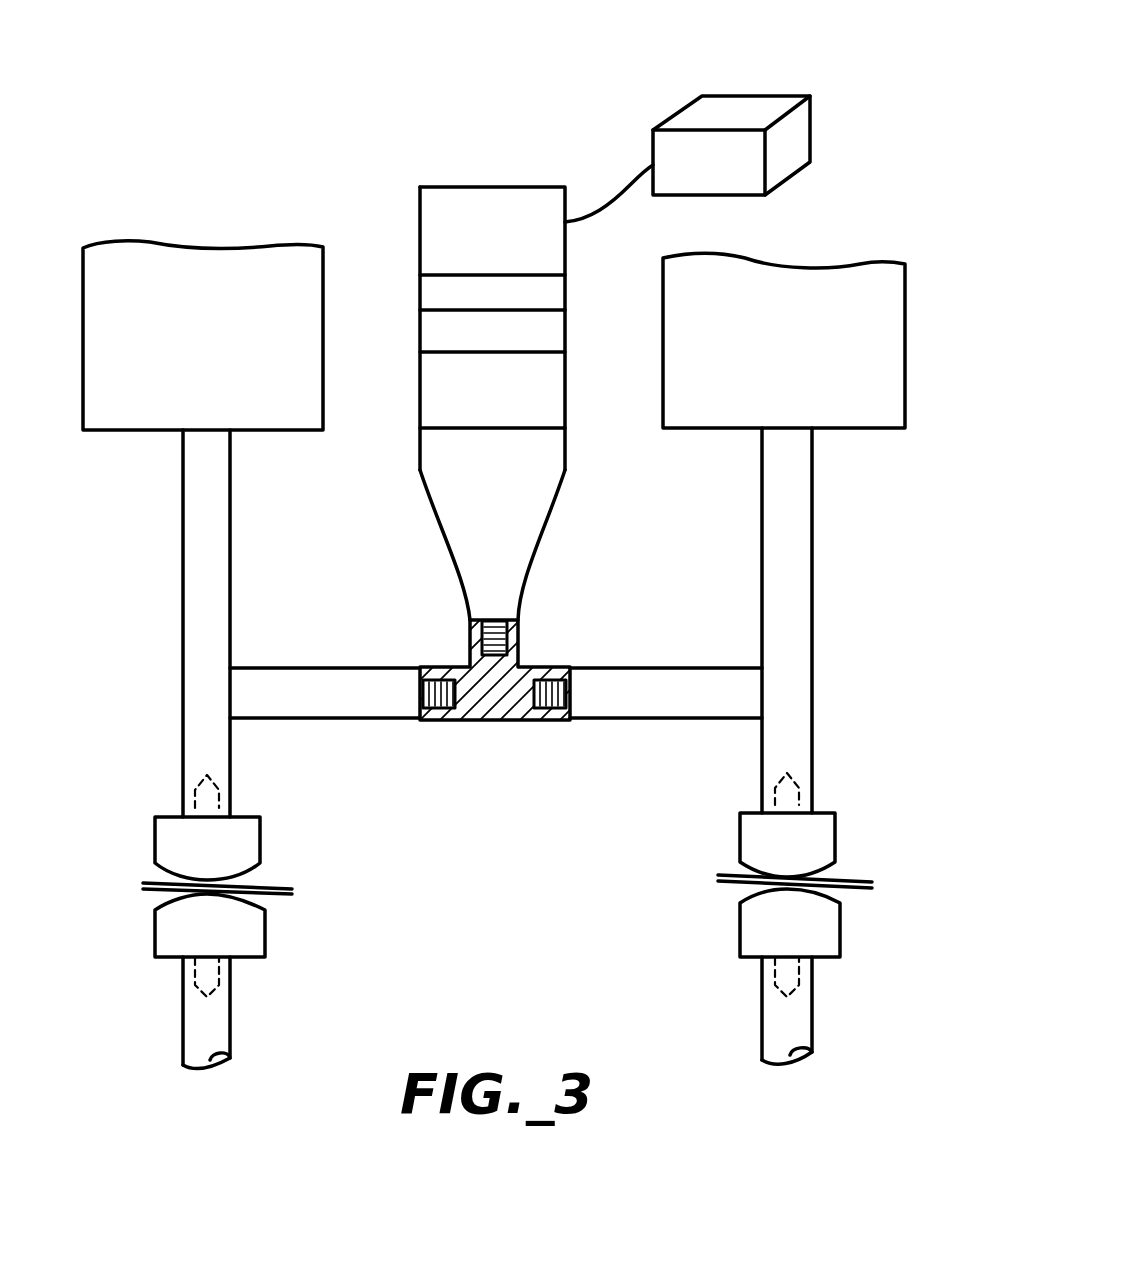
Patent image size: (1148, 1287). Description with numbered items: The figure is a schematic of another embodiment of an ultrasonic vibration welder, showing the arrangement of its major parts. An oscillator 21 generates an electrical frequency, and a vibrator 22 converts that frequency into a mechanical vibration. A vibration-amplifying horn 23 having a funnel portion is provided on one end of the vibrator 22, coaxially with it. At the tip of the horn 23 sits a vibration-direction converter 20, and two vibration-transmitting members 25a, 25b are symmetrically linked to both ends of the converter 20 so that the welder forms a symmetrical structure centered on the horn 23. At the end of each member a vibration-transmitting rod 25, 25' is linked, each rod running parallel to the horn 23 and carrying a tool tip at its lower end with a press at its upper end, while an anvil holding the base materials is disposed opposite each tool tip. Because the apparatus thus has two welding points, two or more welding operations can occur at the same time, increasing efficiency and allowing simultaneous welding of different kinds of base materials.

The vibration-direction converter 20 is at (490, 720).
The oscillator 21 is at (768, 100).
The vibrator 22 is at (528, 185).
The vibration-amplifying horn 23 is at (528, 545).
The vibration-transmitting rod 25 is at (170, 749).
The vibration-transmitting rod 25' is at (833, 746).
The vibration-transmitting member 25a is at (336, 720).
The vibration-transmitting member 25b is at (658, 720).